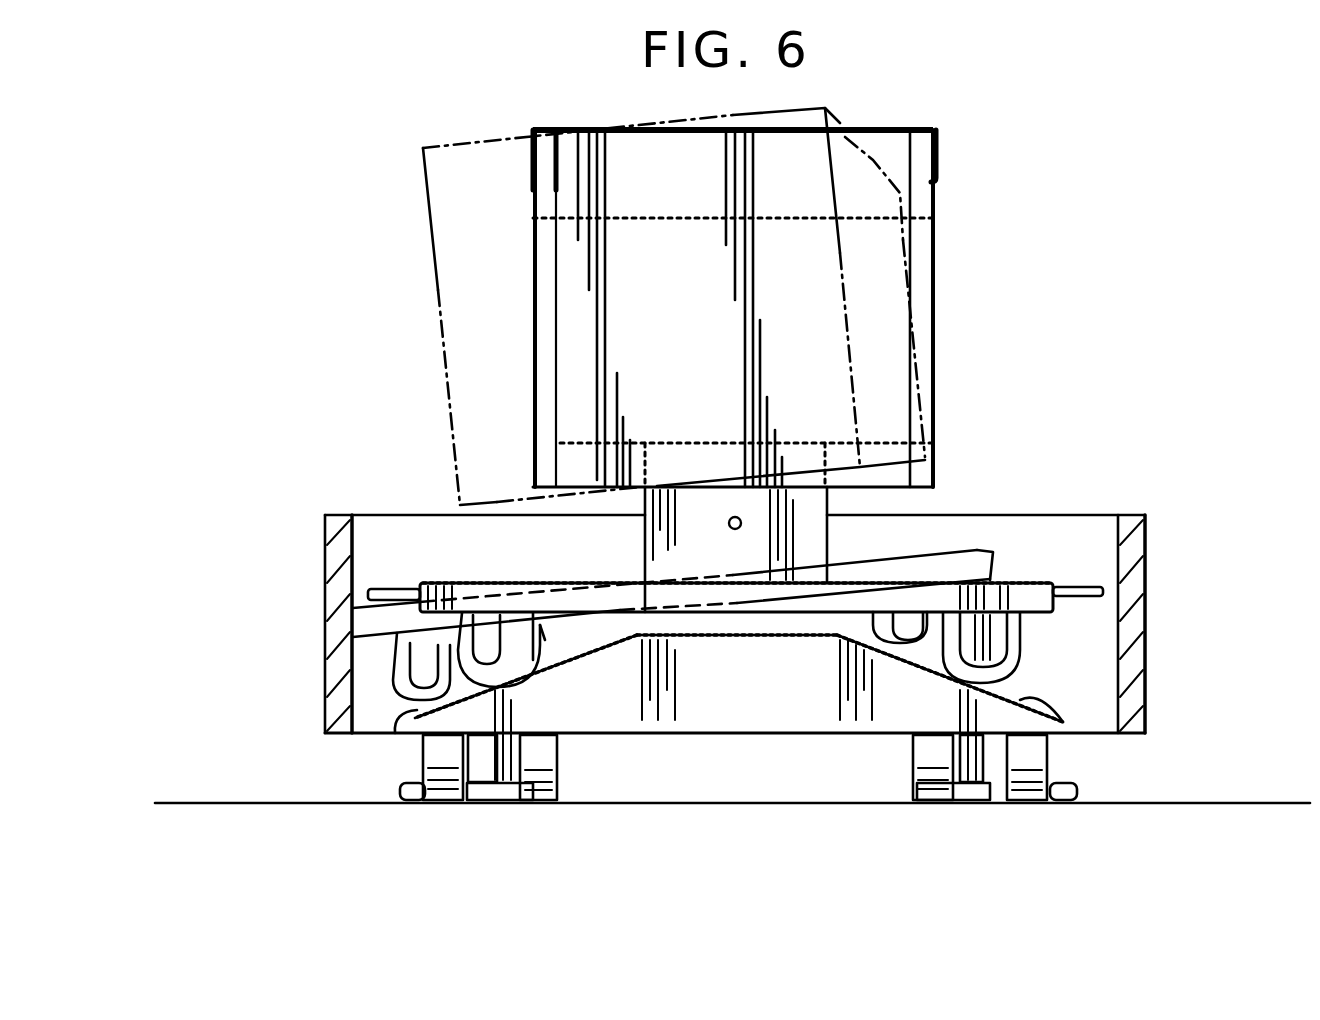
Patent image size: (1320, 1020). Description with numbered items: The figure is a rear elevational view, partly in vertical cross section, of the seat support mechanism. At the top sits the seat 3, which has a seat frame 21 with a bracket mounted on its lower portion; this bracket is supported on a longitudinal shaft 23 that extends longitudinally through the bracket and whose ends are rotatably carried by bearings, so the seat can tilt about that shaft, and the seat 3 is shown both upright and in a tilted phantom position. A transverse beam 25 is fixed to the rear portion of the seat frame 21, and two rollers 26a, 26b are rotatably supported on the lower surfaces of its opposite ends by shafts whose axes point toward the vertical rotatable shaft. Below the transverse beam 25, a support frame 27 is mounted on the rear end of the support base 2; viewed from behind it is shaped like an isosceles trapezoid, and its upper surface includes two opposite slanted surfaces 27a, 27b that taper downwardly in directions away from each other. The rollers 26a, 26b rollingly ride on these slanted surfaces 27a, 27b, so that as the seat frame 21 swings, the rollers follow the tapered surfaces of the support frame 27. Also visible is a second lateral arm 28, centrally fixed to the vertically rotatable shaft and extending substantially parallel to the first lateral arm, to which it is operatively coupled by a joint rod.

The support base 2 is at (1148, 608).
The seat 3 is at (533, 228).
The seat frame 21 is at (533, 347).
The longitudinal shaft 23 is at (741, 524).
The transverse beam 25 is at (980, 553).
The roller 26a is at (507, 643).
The roller 26b is at (1010, 655).
The support frame 27 is at (712, 706).
The slanted surface 27a is at (417, 710).
The slanted surface 27b is at (1065, 722).
The second lateral arm 28 is at (1085, 587).